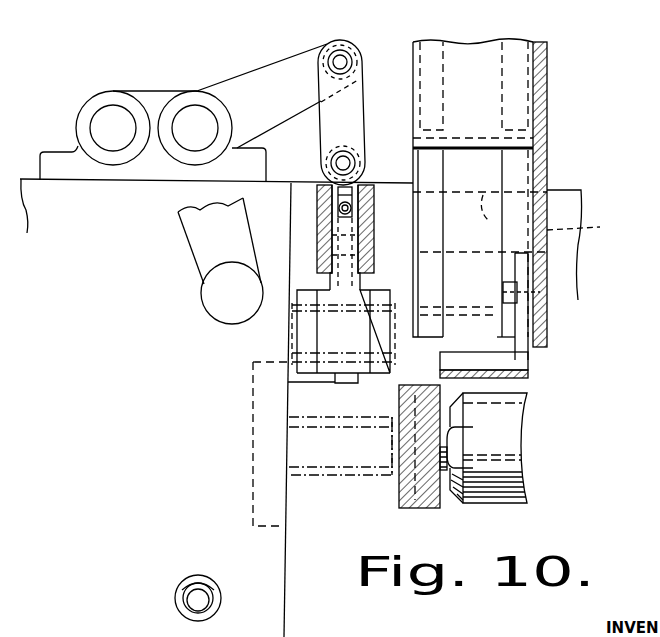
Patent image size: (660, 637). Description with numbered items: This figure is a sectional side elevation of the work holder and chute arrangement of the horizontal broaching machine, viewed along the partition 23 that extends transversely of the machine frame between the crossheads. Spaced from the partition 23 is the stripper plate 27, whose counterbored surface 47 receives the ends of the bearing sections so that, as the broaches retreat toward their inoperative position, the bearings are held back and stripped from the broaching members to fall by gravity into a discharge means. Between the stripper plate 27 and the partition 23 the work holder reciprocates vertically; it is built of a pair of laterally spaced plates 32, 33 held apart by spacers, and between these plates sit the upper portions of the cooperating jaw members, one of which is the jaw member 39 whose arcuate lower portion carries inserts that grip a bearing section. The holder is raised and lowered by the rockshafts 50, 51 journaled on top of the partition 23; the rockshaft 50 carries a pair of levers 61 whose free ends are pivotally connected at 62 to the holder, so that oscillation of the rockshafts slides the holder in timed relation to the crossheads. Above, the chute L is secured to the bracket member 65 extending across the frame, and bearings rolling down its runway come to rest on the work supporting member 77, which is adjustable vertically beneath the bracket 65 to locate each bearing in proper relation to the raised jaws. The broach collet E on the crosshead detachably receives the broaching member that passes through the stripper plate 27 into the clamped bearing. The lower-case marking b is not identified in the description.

The partition 23 is at (285, 636).
The stripper plate 27 is at (437, 503).
The plate 32 is at (394, 186).
The plate 33 is at (318, 224).
The jaw member 39 is at (307, 338).
The counterbored surface 47 is at (399, 405).
The rockshaft 50 is at (193, 120).
The rockshaft 51 is at (117, 114).
The lever 61 is at (283, 67).
The pivotal connection 62 is at (206, 249).
The bracket member 65 is at (548, 147).
The work supporting member 77 is at (532, 371).
The work feeding chute L is at (548, 72).
The band b is at (328, 495).
The broach collet E is at (528, 423).